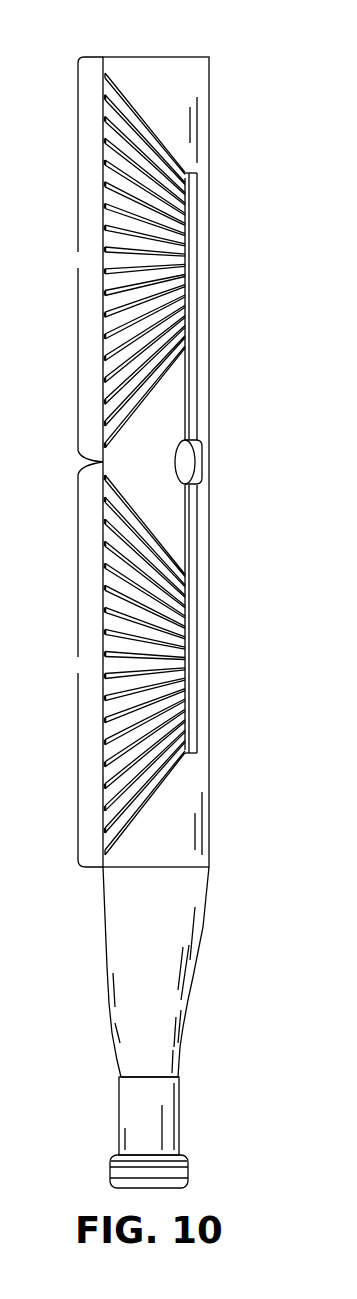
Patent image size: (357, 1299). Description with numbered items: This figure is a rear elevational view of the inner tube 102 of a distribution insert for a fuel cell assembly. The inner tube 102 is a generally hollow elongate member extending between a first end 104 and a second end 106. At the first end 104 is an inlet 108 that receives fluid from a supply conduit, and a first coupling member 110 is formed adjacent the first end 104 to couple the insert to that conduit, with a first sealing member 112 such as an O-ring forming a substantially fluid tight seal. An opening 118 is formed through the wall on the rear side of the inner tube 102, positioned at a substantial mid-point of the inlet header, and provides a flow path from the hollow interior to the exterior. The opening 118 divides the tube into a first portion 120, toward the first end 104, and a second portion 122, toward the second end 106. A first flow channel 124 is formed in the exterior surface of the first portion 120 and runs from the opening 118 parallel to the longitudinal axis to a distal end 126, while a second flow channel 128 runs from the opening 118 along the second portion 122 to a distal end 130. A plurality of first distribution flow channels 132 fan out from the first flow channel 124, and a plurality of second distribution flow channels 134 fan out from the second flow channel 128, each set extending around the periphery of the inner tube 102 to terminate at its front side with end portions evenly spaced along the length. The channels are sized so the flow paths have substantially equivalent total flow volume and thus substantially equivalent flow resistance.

The inner tube 102 is at (227, 49).
The first end 104 is at (180, 1112).
The second end 106 is at (193, 85).
The inlet 108 is at (135, 1188).
The first coupling member 110 is at (188, 1157).
The first sealing member 112 is at (190, 1172).
The opening 118 is at (197, 462).
The first portion 120 is at (78, 657).
The second portion 122 is at (78, 252).
The first flow channel 124 is at (198, 662).
The distal end 126 is at (190, 753).
The second flow channel 128 is at (198, 258).
The distal end 130 is at (193, 174).
The first distribution flow channels 132 is at (118, 843).
The second distribution flow channels 134 is at (138, 97).